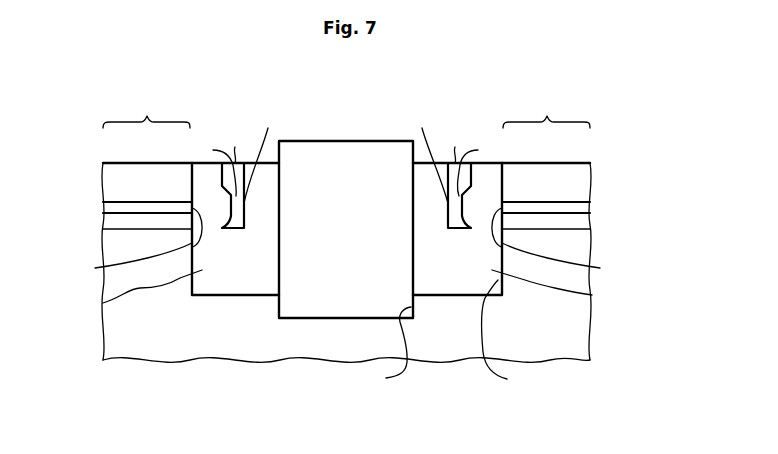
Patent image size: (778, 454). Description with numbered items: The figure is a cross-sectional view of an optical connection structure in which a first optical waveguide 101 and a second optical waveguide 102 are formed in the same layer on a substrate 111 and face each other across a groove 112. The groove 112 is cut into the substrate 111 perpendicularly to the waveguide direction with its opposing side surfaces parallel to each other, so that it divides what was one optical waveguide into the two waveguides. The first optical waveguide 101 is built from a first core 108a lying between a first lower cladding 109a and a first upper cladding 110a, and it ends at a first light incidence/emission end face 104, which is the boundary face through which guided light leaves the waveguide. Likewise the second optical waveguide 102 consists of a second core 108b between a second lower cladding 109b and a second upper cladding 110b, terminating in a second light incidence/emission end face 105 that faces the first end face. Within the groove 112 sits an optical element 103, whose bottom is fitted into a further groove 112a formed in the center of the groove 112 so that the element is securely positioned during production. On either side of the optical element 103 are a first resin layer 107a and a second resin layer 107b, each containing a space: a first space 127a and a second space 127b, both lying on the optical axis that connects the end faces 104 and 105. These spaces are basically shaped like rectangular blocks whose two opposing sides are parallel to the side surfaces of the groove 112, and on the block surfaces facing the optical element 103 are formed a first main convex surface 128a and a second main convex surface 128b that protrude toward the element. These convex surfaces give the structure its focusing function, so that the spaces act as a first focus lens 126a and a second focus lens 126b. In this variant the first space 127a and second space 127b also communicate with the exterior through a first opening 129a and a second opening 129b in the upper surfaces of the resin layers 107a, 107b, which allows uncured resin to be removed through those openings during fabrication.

The first optical waveguide 101 is at (146, 110).
The second optical waveguide 102 is at (546, 110).
The optical element 103 is at (345, 141).
The first light incidence/emission end face 104 is at (131, 243).
The second light incidence/emission end face 105 is at (564, 243).
The first resin layer 107a is at (131, 293).
The second resin layer 107b is at (566, 287).
The first core 108a is at (103, 206).
The second core 108b is at (590, 207).
The first lower cladding 109a is at (103, 226).
The second lower cladding 109b is at (590, 226).
The first upper cladding 110a is at (103, 180).
The second upper cladding 110b is at (590, 180).
The substrate 111 is at (590, 330).
The groove 112 is at (510, 335).
The groove 112a is at (376, 348).
The first focus lens 126a is at (237, 112).
The second focus lens 126b is at (465, 112).
The first space 127a is at (267, 155).
The second space 127b is at (424, 155).
The first main convex surface 128a is at (204, 168).
The second main convex surface 128b is at (489, 168).
The first opening 129a is at (235, 144).
The second opening 129b is at (456, 145).